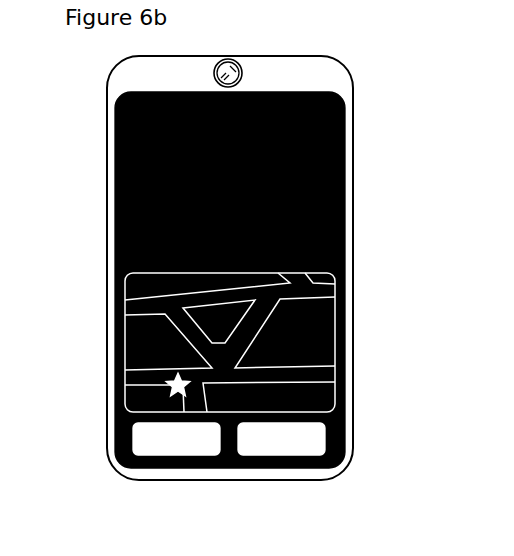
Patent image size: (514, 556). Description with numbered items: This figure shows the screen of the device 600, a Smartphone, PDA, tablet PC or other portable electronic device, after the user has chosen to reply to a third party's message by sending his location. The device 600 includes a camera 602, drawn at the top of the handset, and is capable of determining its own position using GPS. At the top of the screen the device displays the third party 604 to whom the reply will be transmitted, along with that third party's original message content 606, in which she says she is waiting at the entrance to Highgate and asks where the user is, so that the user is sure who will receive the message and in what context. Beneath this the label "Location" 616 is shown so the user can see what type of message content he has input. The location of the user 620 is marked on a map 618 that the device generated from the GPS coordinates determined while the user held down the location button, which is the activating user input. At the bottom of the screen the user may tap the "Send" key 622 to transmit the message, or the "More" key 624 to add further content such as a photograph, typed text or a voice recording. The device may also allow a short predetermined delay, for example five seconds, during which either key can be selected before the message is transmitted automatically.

The device 600 is at (91, 122).
The camera 602 is at (240, 65).
The third party 604 is at (315, 123).
The message content 606 is at (133, 209).
The "Location" label 616 is at (172, 257).
The map 618 is at (152, 357).
The location of the user 620 is at (157, 393).
The "Send" key 622 is at (150, 440).
The "More" key 624 is at (255, 440).